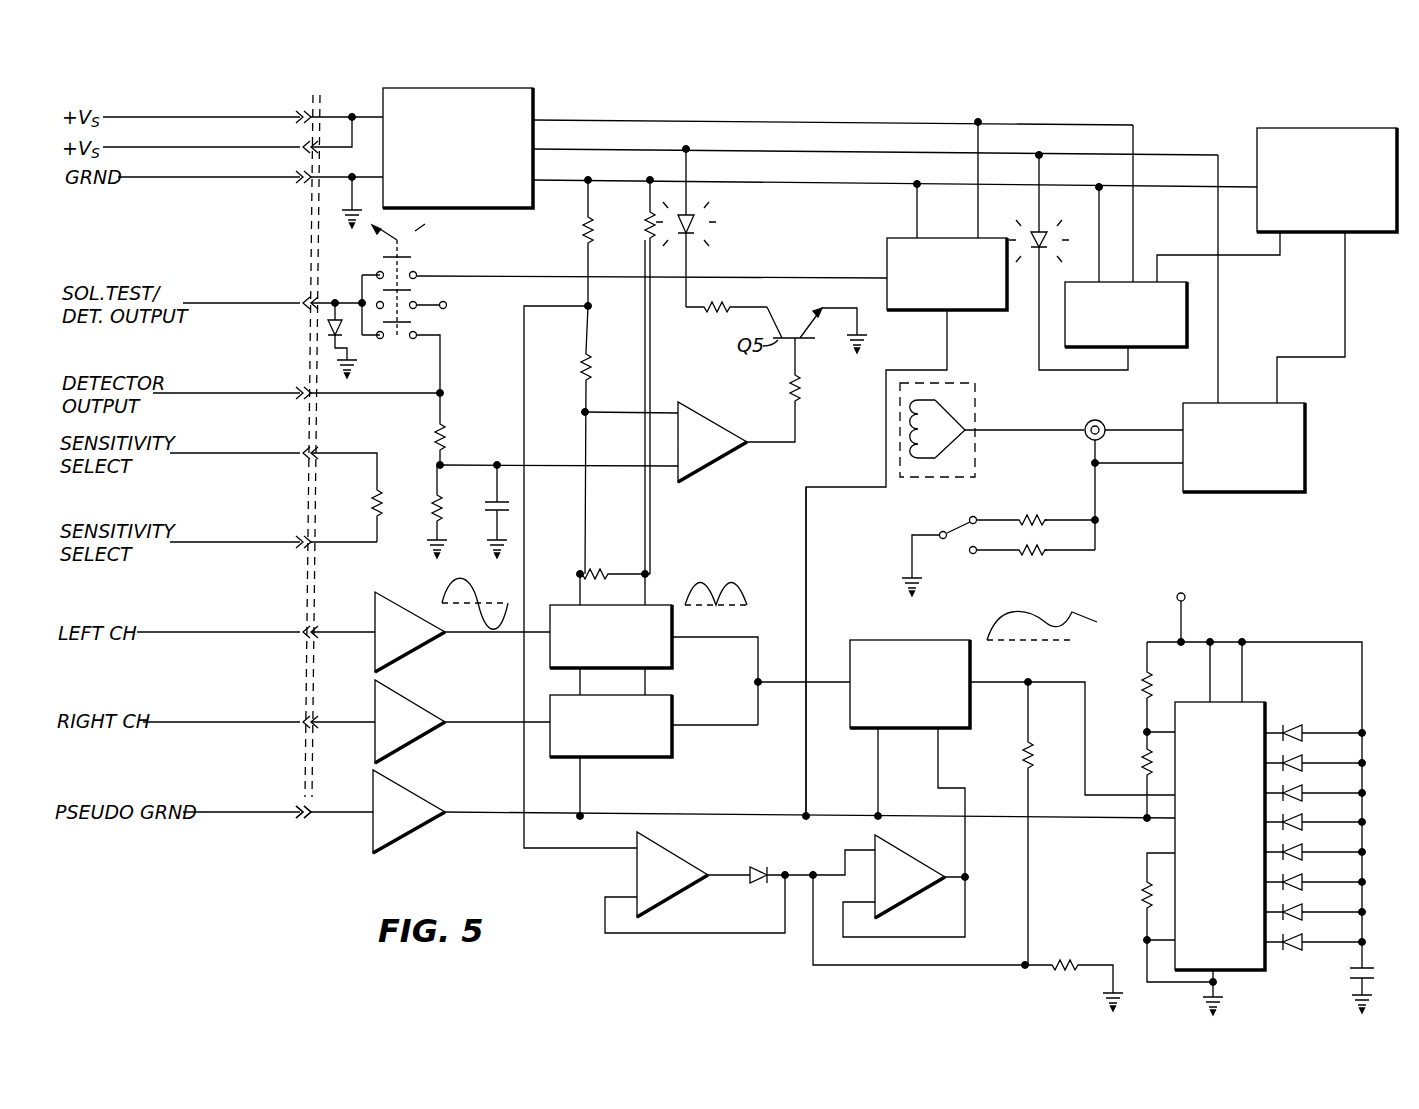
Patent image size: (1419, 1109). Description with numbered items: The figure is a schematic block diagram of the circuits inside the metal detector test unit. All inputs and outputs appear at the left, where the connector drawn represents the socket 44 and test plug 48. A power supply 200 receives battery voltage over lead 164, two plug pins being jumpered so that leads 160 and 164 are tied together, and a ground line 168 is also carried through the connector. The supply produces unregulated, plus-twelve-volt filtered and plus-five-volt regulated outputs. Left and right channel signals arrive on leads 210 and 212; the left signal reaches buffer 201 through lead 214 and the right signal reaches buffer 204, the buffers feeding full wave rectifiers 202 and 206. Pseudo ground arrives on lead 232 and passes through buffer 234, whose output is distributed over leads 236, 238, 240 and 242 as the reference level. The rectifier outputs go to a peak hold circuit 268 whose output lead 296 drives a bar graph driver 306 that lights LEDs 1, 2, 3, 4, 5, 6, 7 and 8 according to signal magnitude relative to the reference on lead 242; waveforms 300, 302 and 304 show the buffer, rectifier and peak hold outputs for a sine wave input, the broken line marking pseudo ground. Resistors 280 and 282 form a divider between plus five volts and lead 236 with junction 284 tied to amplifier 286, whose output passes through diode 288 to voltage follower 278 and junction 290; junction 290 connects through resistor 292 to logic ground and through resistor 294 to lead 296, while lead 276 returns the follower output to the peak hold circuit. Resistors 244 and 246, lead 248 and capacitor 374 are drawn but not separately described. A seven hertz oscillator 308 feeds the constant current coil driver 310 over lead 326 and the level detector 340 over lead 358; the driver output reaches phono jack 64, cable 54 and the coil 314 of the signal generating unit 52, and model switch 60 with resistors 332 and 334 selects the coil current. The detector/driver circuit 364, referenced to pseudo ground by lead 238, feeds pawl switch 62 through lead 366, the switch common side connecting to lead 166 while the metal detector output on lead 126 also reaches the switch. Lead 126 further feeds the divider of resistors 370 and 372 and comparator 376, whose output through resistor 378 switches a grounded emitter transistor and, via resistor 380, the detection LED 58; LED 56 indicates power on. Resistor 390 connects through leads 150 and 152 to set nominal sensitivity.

The lead 160 is at (189, 116).
The lead 164 is at (189, 148).
The ground line 168 is at (238, 177).
The lead 166 is at (232, 300).
The pawl switch 62 is at (428, 251).
The lead 366 is at (806, 278).
The lead 126 is at (232, 390).
The resistor 370 is at (446, 433).
The lead 150 is at (200, 453).
The resistor 390 is at (384, 494).
The lead 152 is at (248, 522).
The capacitor 374 is at (493, 502).
The resistor 372 is at (432, 525).
The lead 210 is at (250, 630).
The left channel buffer input 214 is at (330, 632).
The lead 212 is at (240, 722).
The lead 232 is at (251, 812).
The socket 44 is at (290, 822).
The test plug 48 is at (313, 822).
The buffer 201 is at (418, 646).
The buffer 204 is at (418, 736).
The buffer 234 is at (418, 827).
The waveform 300 is at (452, 593).
The waveform 302 is at (734, 598).
The full wave rectifier 202 is at (670, 661).
The full wave rectifier 206 is at (672, 748).
The rectifier bias line 248 is at (668, 564).
The resistor 244 is at (606, 572).
The lead 236 is at (583, 792).
The power supply 200 is at (533, 103).
The resistor 280 is at (584, 240).
The junction 284 is at (594, 318).
The resistor 282 is at (582, 372).
The resistor 246 is at (650, 240).
The detect indicator light 58 is at (702, 227).
The resistor 380 is at (708, 314).
The resistor 378 is at (800, 394).
The comparator 376 is at (721, 456).
The detector/driver circuit 364 is at (967, 310).
The lead 238 is at (806, 762).
The power on indicator light 56 is at (1044, 226).
The level detector 340 is at (1165, 348).
The lead 358 is at (1162, 254).
The oscillator 308 is at (1312, 234).
The lead 326 is at (1290, 398).
The coil driver circuit 310 is at (1203, 494).
The signal generating unit 52 is at (962, 441).
The coil 314 is at (914, 462).
The cable 54 is at (1008, 431).
The phono jack 64 is at (1092, 418).
The model switch 60 is at (956, 540).
The resistor 332 is at (1027, 515).
The resistor 334 is at (1025, 556).
The waveform 304 is at (1070, 620).
The peak hold circuit 268 is at (864, 640).
The output lead 296 is at (988, 682).
The resistor 294 is at (1030, 766).
The lead 240 is at (878, 776).
The lead 276 is at (940, 762).
The lead 242 is at (1048, 820).
The amplifier 286 is at (676, 870).
The diode 288 is at (752, 879).
The voltage follower 278 is at (899, 897).
The junction 290 is at (1020, 968).
The resistor 292 is at (1060, 962).
The bar graph driver 306 is at (1256, 702).
The indicator light 1 is at (1302, 935).
The indicator light 2 is at (1302, 905).
The indicator light 3 is at (1302, 875).
The indicator light 4 is at (1302, 845).
The indicator light 5 is at (1302, 815).
The indicator light 6 is at (1302, 786).
The indicator light 7 is at (1302, 756).
The indicator light 8 is at (1302, 726).